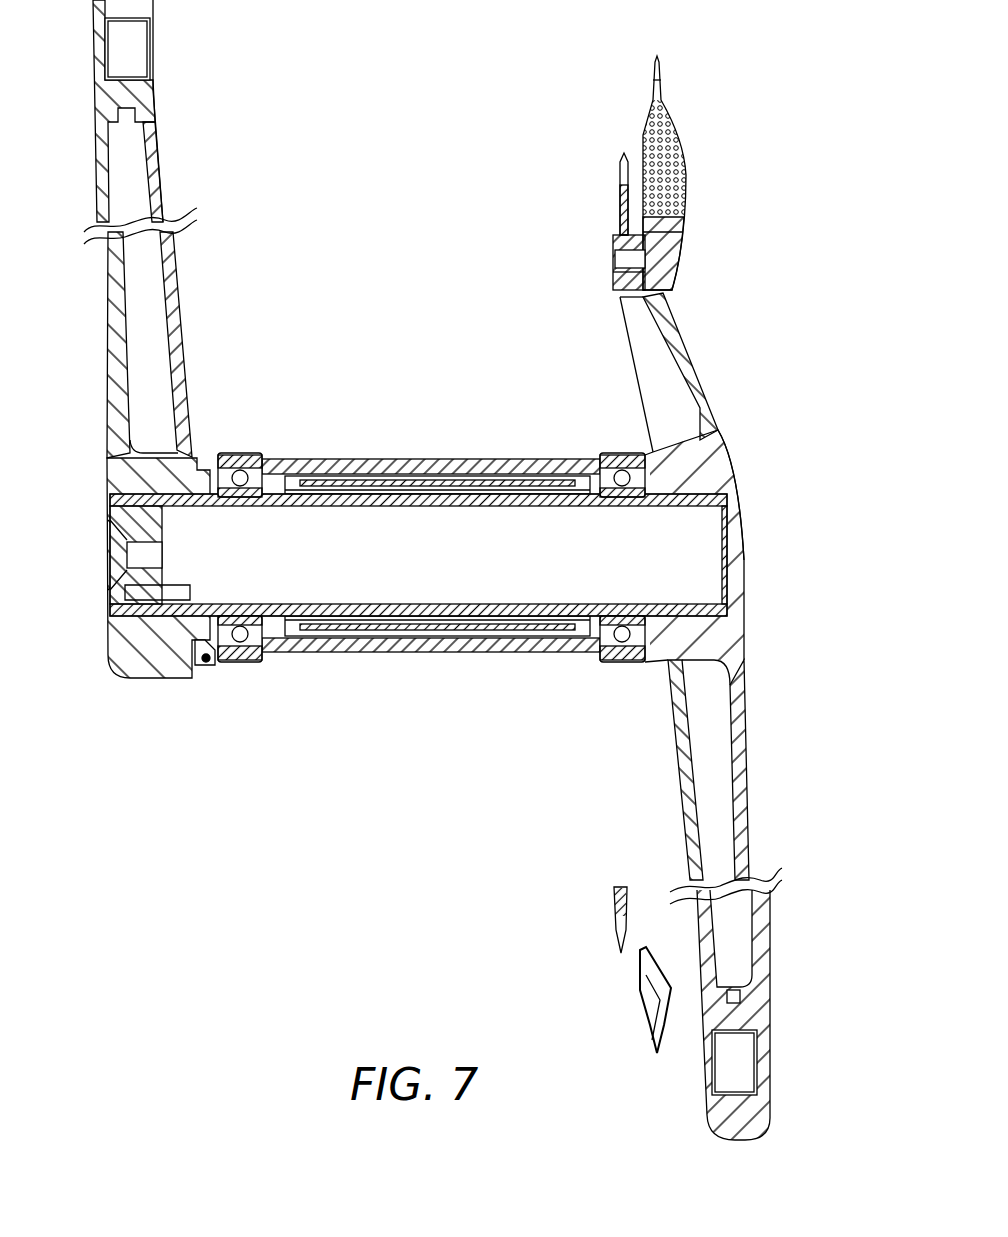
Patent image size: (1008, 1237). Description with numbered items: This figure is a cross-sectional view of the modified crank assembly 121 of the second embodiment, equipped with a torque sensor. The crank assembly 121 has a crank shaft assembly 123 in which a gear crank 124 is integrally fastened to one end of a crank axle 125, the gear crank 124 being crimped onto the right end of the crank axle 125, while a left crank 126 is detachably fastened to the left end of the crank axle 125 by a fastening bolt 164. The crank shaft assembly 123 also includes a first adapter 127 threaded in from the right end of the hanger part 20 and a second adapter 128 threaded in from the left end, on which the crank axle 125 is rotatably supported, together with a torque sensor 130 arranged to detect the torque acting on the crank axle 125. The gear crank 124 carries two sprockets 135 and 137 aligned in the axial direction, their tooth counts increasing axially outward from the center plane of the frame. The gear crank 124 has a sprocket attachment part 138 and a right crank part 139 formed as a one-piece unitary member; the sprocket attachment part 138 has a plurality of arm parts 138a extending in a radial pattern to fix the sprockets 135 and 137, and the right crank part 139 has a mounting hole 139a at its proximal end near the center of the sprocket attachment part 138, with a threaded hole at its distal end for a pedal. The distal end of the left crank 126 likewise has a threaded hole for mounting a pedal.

The hanger part 20 is at (468, 470).
The crank assembly 121 is at (745, 455).
The crank shaft assembly 123 is at (550, 478).
The gear crank 124 is at (748, 518).
The crank axle 125 is at (385, 490).
The left crank 126 is at (115, 383).
The first adapter 127 is at (618, 455).
The second adapter 128 is at (245, 455).
The torque sensor 130 is at (408, 635).
The sprocket 135 is at (620, 205).
The sprocket 137 is at (684, 130).
The sprocket attachment part 138 is at (721, 364).
The arm part 138a is at (700, 385).
The right crank part 139 is at (754, 856).
The mounting hole 139a is at (700, 592).
The fastening bolt 164 is at (125, 592).